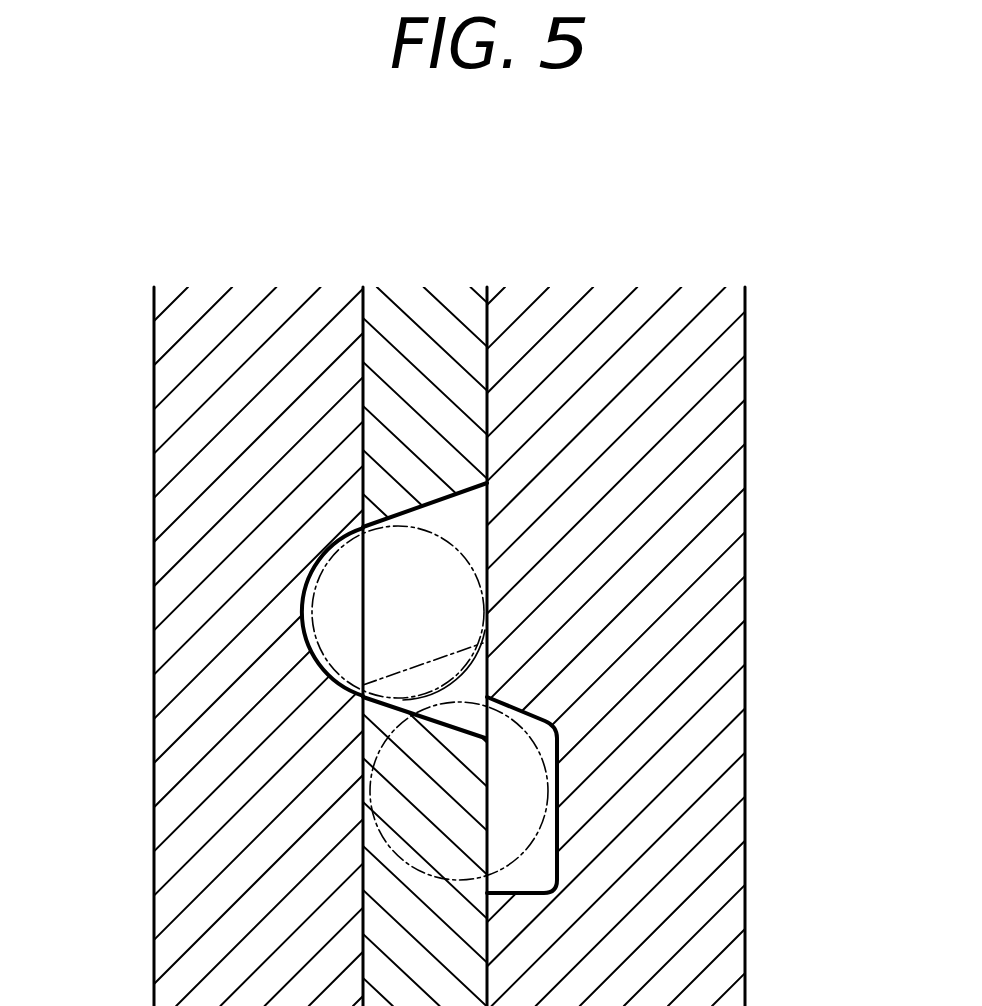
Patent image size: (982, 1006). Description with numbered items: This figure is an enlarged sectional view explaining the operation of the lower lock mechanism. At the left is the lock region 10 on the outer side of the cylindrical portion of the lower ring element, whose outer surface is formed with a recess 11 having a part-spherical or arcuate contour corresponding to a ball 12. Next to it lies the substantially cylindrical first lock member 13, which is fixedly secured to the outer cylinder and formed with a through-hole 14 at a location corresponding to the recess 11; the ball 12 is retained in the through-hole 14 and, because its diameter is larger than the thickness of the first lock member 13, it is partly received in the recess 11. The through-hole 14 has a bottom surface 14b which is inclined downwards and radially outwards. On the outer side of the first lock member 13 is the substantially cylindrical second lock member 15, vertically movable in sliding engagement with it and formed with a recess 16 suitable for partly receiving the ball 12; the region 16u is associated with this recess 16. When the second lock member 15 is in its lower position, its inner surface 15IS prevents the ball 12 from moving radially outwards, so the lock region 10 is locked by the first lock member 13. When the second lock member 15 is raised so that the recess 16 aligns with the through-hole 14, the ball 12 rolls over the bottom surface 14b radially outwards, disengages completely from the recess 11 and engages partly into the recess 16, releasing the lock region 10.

The lock region 10 is at (268, 590).
The recess 11 is at (323, 617).
The ball 12 is at (467, 563).
The first lock member 13 is at (414, 345).
The through-hole 14 is at (467, 518).
The bottom surface 14b is at (447, 725).
The second lock member 15 is at (635, 322).
The inner surface 15IS is at (472, 308).
The recess 16 is at (530, 875).
The upper surface of cavity 16u is at (527, 713).